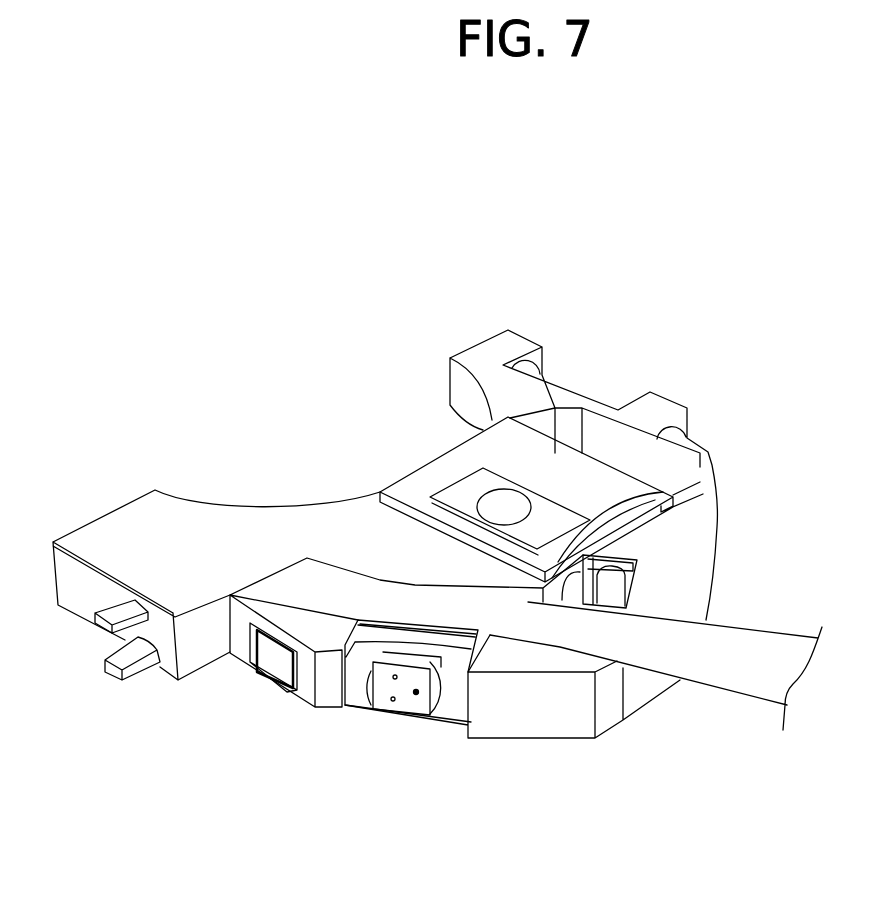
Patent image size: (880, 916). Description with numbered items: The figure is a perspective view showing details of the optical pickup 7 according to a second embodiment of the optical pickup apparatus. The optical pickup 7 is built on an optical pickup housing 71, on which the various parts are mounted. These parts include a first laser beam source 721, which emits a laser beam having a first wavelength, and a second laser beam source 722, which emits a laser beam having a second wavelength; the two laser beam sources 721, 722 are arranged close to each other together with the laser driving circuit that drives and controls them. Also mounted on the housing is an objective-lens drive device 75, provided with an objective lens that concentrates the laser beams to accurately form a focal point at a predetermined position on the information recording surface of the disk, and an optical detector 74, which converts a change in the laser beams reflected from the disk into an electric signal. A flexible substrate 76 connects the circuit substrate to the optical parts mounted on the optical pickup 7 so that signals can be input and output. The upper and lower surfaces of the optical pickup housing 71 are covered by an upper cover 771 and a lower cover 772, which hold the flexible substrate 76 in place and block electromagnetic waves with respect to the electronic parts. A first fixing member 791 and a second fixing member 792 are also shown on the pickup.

The optical pickup 7 is at (755, 383).
The optical pickup housing 71 is at (472, 362).
The objective-lens drive device 75 is at (493, 503).
The upper cover 771 is at (283, 518).
The lower cover 772 is at (648, 688).
The optical detector 74 is at (257, 642).
The first laser beam source 721 is at (698, 481).
The second laser beam source 722 is at (410, 659).
The flexible substrate 76 is at (717, 662).
The first fixing member 791 is at (612, 555).
The second fixing member 792 is at (615, 597).